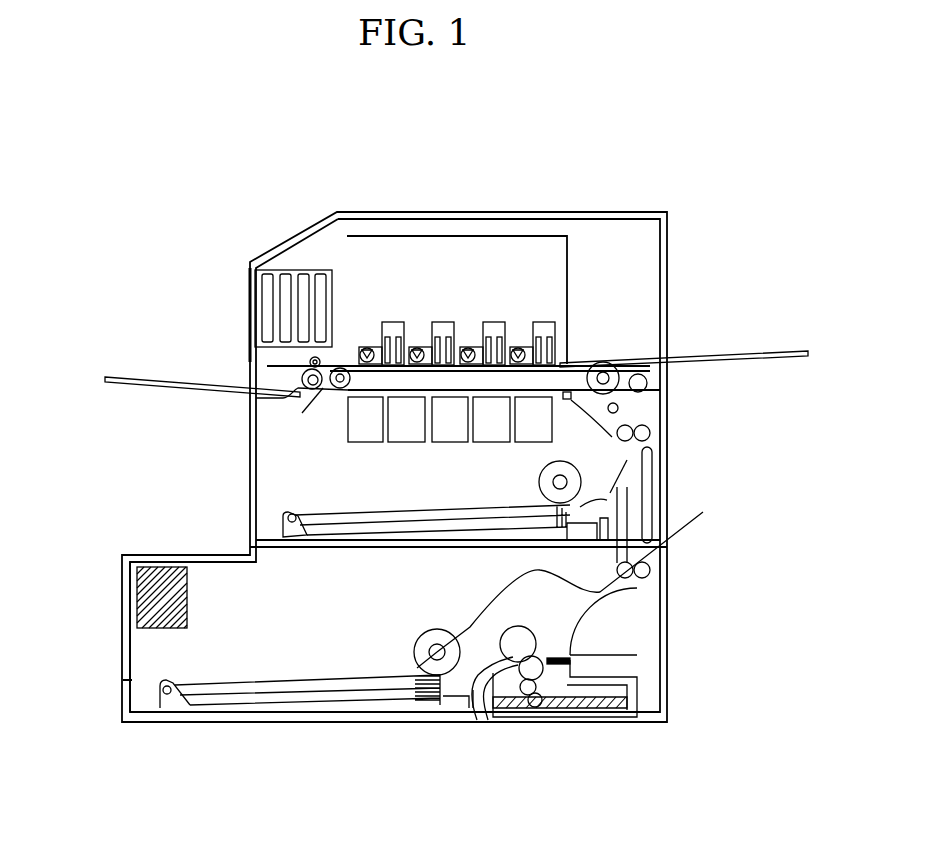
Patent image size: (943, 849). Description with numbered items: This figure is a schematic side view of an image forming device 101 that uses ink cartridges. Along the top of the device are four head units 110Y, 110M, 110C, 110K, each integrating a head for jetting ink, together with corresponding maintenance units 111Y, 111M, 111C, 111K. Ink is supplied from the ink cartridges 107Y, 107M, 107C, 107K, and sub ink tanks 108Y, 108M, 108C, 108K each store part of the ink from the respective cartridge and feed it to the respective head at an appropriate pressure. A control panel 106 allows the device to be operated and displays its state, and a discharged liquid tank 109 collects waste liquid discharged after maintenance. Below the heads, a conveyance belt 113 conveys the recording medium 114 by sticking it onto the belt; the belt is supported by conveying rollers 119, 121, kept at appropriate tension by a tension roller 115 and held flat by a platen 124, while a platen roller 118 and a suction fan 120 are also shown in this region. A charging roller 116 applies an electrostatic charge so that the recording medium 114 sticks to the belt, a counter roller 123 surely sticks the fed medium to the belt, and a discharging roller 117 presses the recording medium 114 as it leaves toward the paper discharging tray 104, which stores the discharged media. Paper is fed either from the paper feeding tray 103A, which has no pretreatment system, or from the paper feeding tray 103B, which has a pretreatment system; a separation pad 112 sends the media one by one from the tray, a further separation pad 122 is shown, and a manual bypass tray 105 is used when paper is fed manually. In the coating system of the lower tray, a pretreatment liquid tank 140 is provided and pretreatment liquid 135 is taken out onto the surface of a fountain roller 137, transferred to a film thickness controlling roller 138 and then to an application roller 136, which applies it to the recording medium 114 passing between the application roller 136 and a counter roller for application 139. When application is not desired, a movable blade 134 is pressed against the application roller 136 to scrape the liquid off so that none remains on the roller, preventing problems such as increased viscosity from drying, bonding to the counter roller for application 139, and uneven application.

The image forming device 101 is at (600, 217).
The paper feeding tray 103A is at (260, 507).
The paper feeding tray 103B is at (127, 700).
The paper discharging tray 104 is at (140, 383).
The manual bypass tray 105 is at (730, 360).
The control panel 106 is at (320, 287).
The ink cartridge 107Y is at (302, 293).
The ink cartridge 107M is at (286, 312).
The ink cartridge 107C is at (270, 330).
The ink cartridge 107K is at (260, 334).
The sub ink tank 108Y is at (392, 434).
The sub ink tank 108M is at (436, 434).
The sub ink tank 108C is at (477, 434).
The sub ink tank 108K is at (540, 434).
The discharged liquid tank 109 is at (365, 419).
The head unit 110Y is at (392, 322).
The head unit 110M is at (442, 322).
The head unit 110C is at (493, 322).
The head unit 110K is at (543, 322).
The maintenance unit 111Y is at (367, 347).
The maintenance unit 111M is at (417, 347).
The maintenance unit 111C is at (468, 347).
The maintenance unit 111K is at (518, 347).
The separation pad 112 is at (573, 485).
The conveyance belt 113 is at (348, 390).
The recording medium 114 is at (275, 367).
The tension roller 115 is at (650, 427).
The charging roller 116 is at (233, 398).
The discharging roller 117 is at (268, 357).
The platen roller 118 is at (630, 405).
The conveying roller 119 is at (640, 358).
The suction fan 120 is at (307, 388).
The conveying roller 121 is at (340, 389).
The separation pad 122 is at (615, 364).
The counter roller 123 is at (650, 383).
The platen 124 is at (622, 362).
The movable blade 134 is at (570, 661).
The pretreatment liquid 135 is at (627, 697).
The application roller 136 is at (542, 670).
The fountain roller 137 is at (541, 703).
The film thickness controlling roller 138 is at (523, 698).
The counter roller for application 139 is at (487, 707).
The pretreatment liquid tank 140 is at (155, 603).